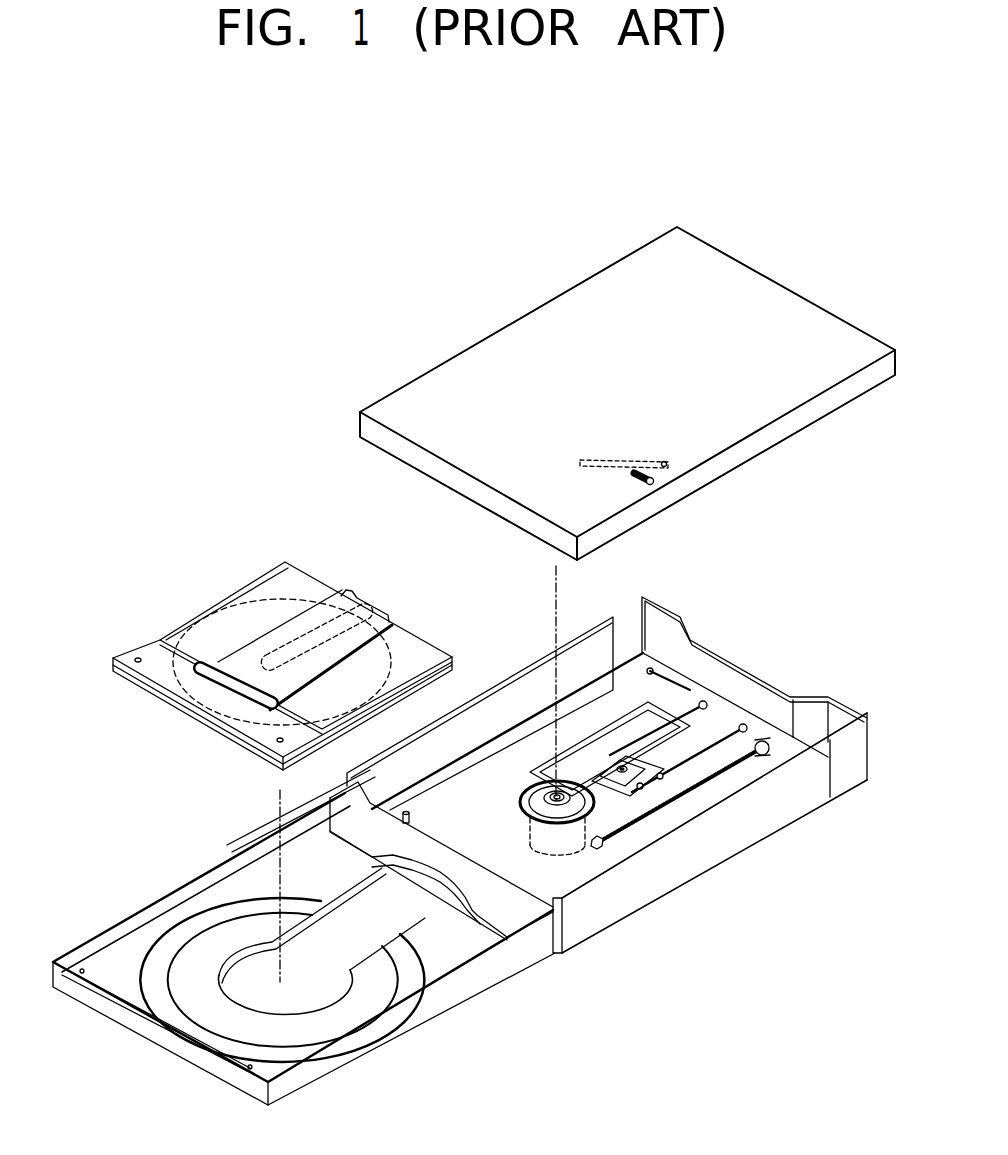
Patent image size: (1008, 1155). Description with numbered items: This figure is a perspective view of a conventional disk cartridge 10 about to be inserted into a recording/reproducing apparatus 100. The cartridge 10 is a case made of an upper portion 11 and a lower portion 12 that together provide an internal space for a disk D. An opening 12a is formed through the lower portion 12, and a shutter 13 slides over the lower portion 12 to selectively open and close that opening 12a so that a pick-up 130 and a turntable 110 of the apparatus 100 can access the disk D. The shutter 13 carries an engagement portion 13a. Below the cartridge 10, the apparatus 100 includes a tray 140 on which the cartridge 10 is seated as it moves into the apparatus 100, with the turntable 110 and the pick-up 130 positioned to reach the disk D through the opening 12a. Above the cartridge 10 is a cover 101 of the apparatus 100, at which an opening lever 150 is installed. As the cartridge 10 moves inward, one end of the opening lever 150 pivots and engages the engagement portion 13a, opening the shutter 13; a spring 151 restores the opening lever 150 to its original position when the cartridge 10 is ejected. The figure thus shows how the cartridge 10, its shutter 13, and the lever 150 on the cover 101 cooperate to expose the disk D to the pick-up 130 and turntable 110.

The disk cartridge 10 is at (272, 663).
The upper portion 11 is at (125, 673).
The lower portion 12 is at (163, 703).
The opening 12a is at (323, 625).
The shutter 13 is at (372, 610).
The engagement portion 13a is at (388, 618).
The disk D is at (193, 638).
The recording/reproducing apparatus 100 is at (460, 835).
The cover 101 is at (455, 373).
The turntable 110 is at (540, 797).
The pick-up 130 is at (617, 760).
The tray 140 is at (372, 1047).
The opening lever 150 is at (600, 459).
The spring 151 is at (637, 484).